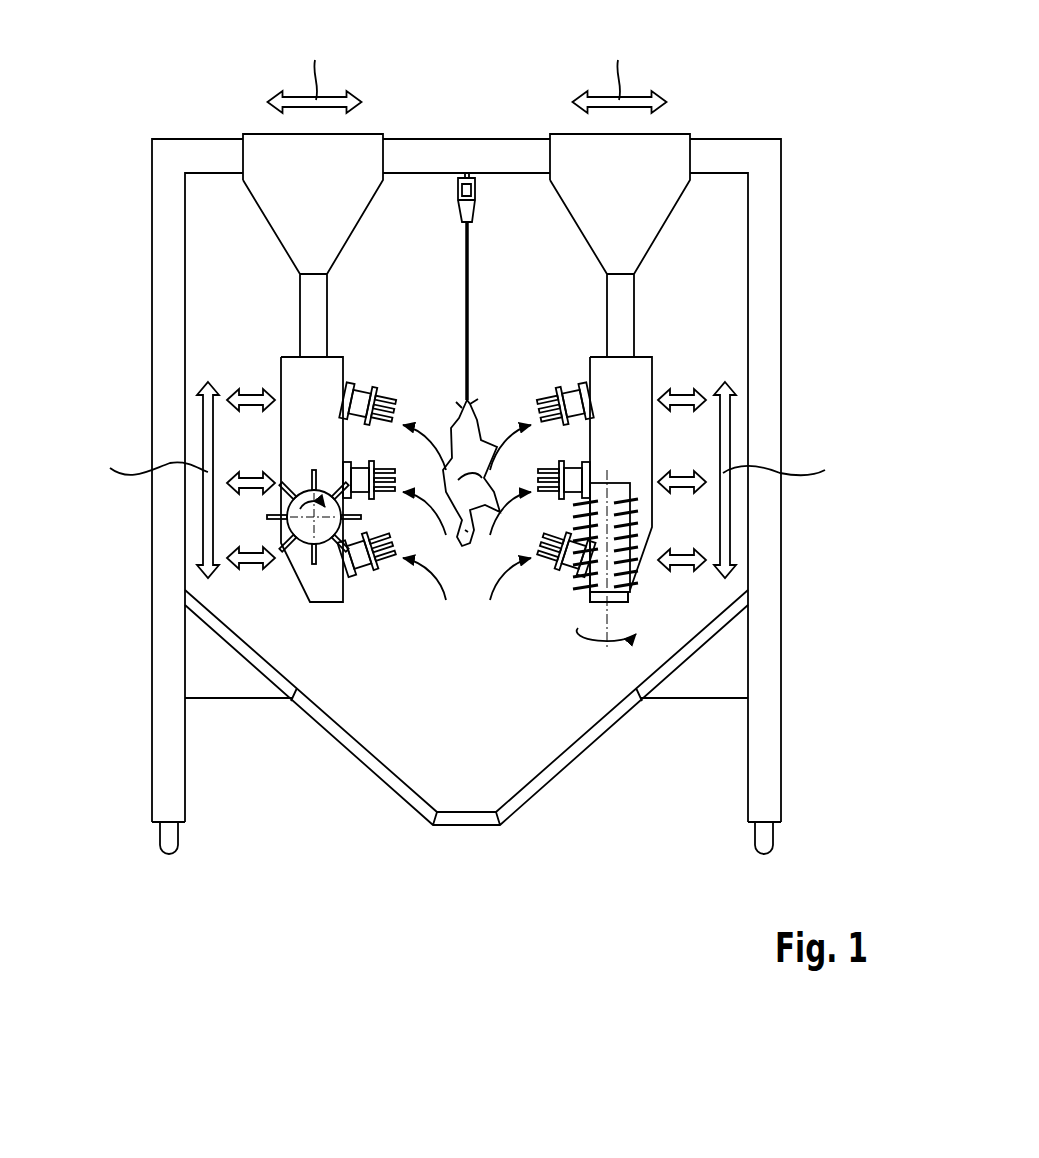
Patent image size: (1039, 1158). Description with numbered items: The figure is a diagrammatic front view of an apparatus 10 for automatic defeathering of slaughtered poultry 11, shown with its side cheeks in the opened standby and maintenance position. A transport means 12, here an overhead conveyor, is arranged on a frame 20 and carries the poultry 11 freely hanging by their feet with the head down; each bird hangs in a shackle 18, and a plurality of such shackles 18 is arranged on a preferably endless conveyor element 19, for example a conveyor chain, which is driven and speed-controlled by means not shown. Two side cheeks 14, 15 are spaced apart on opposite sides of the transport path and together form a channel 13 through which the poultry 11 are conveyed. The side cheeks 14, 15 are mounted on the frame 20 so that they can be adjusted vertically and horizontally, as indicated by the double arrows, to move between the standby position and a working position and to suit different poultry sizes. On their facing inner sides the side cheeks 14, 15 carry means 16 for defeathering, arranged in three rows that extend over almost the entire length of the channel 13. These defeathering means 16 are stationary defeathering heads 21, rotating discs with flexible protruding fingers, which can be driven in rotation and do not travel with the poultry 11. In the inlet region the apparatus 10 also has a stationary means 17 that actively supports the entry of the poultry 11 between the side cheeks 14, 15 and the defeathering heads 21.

The apparatus 10 is at (794, 86).
The poultry 11 is at (458, 548).
The transport means 12 is at (498, 227).
The channel 13 is at (429, 380).
The side cheek 14 is at (290, 380).
The side cheek 15 is at (645, 381).
The means for defeathering 16 is at (381, 361).
The stationary means for active support of entry 17 is at (299, 560).
The shackle 18 is at (465, 177).
The conveyor element 19 is at (463, 267).
The frame 20 is at (779, 181).
The defeathering head 21 is at (445, 400).